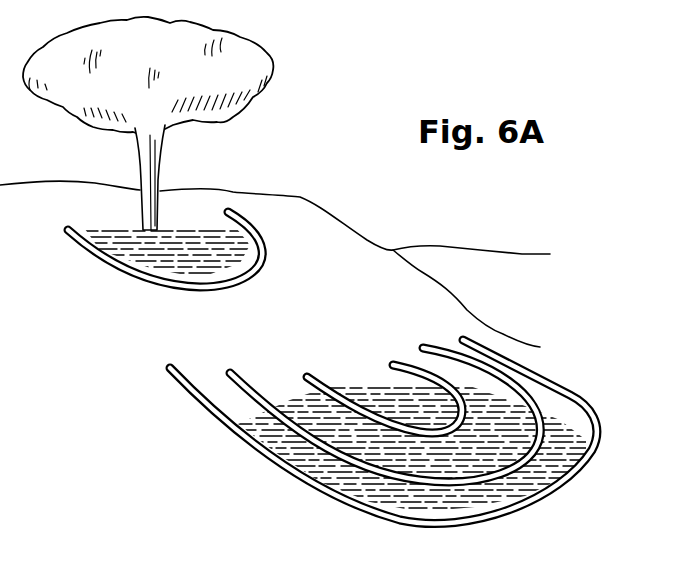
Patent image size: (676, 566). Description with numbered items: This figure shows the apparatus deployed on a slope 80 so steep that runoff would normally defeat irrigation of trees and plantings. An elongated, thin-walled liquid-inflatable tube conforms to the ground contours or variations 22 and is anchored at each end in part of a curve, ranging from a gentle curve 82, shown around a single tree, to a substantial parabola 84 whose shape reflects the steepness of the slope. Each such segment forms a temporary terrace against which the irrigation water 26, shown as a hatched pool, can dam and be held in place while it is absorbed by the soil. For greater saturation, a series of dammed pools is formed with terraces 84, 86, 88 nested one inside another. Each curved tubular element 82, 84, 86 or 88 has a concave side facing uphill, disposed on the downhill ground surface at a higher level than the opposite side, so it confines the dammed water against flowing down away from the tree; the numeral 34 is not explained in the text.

The ground contours or variations 22 is at (522, 254).
The irrigation water 26 is at (224, 240).
The plant 34 is at (157, 170).
The slope 80 is at (540, 347).
The gentle curve 82 is at (266, 262).
The substantial parabola 84 is at (392, 362).
The terrace 86 is at (434, 318).
The terrace 88 is at (170, 366).